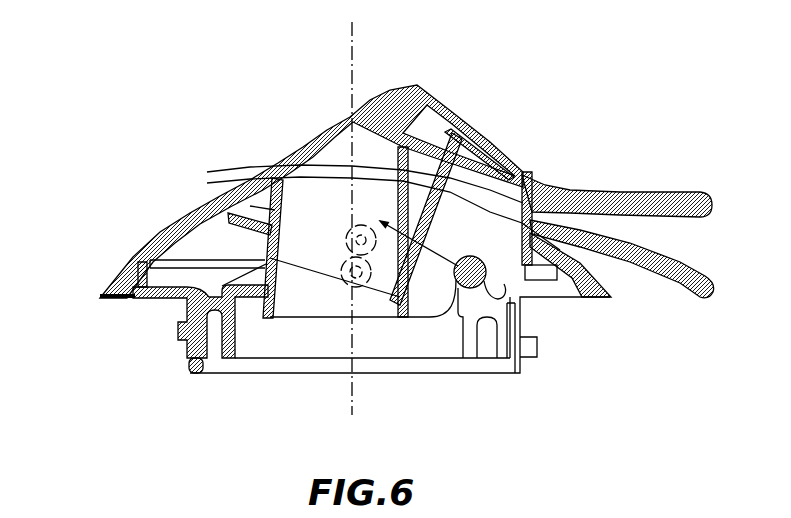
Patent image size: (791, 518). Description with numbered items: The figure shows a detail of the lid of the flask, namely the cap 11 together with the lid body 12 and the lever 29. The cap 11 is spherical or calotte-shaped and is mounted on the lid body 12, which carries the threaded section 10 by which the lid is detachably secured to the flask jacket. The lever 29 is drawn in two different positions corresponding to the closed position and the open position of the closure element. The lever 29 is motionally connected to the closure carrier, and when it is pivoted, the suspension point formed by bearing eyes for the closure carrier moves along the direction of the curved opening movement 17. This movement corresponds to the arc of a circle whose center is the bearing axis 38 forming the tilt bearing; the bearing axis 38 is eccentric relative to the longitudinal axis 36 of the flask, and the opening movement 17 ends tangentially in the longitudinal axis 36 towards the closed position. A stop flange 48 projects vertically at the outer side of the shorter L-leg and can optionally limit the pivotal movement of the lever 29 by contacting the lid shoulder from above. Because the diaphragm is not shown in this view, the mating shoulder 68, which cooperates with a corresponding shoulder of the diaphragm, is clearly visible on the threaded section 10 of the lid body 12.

The longitudinal axis 36 is at (352, 45).
The stop flange 48 is at (236, 283).
The lever 29 is at (683, 257).
The cap 11 is at (132, 258).
The opening movement 17 is at (378, 205).
The bearing axis 38 is at (474, 257).
The lid body 12 is at (178, 302).
The threaded section 10 is at (175, 345).
The mating shoulder 68 is at (197, 369).